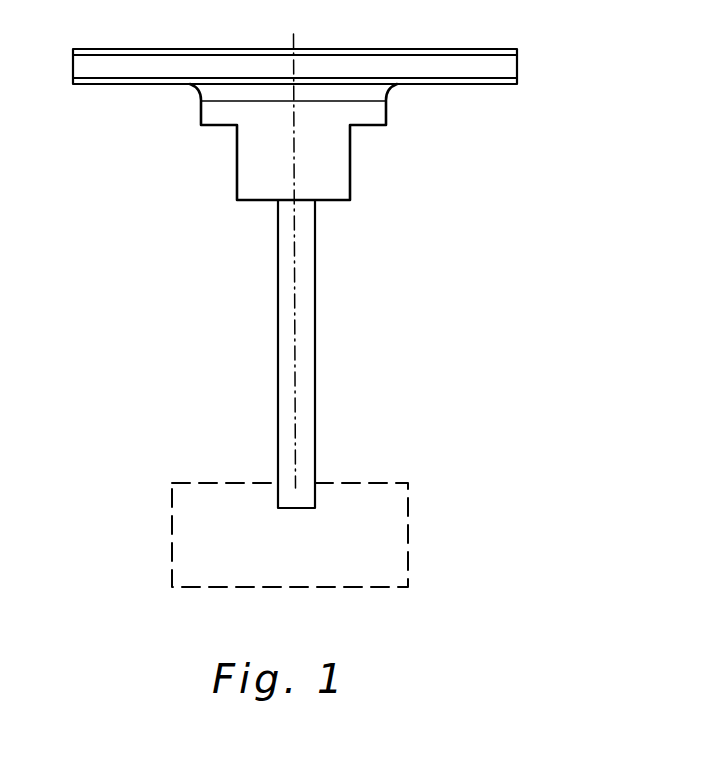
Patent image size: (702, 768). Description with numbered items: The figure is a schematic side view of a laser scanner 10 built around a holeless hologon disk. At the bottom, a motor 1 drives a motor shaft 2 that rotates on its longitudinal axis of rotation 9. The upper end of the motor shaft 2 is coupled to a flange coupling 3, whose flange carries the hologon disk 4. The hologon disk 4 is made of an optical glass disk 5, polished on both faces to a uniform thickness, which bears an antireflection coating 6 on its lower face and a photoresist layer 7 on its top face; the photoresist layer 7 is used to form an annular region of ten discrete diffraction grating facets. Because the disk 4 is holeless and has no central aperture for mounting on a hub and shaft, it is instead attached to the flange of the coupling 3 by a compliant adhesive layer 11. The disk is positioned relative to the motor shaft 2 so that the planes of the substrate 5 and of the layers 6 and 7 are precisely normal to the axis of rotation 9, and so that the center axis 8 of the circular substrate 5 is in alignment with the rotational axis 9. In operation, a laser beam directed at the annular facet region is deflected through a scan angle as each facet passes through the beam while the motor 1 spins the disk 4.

The motor 1 is at (182, 510).
The motor shaft 2 is at (277, 388).
The flange coupling 3 is at (238, 180).
The hologon disk 4 is at (527, 63).
The optical glass disk 5 is at (73, 64).
The antireflection coating 6 is at (73, 84).
The photoresist layer 7 is at (73, 51).
The center axis 8 is at (297, 70).
The longitudinal axis of rotation 9 is at (296, 278).
The scanner 10 is at (152, 292).
The compliant adhesive layer 11 is at (390, 88).